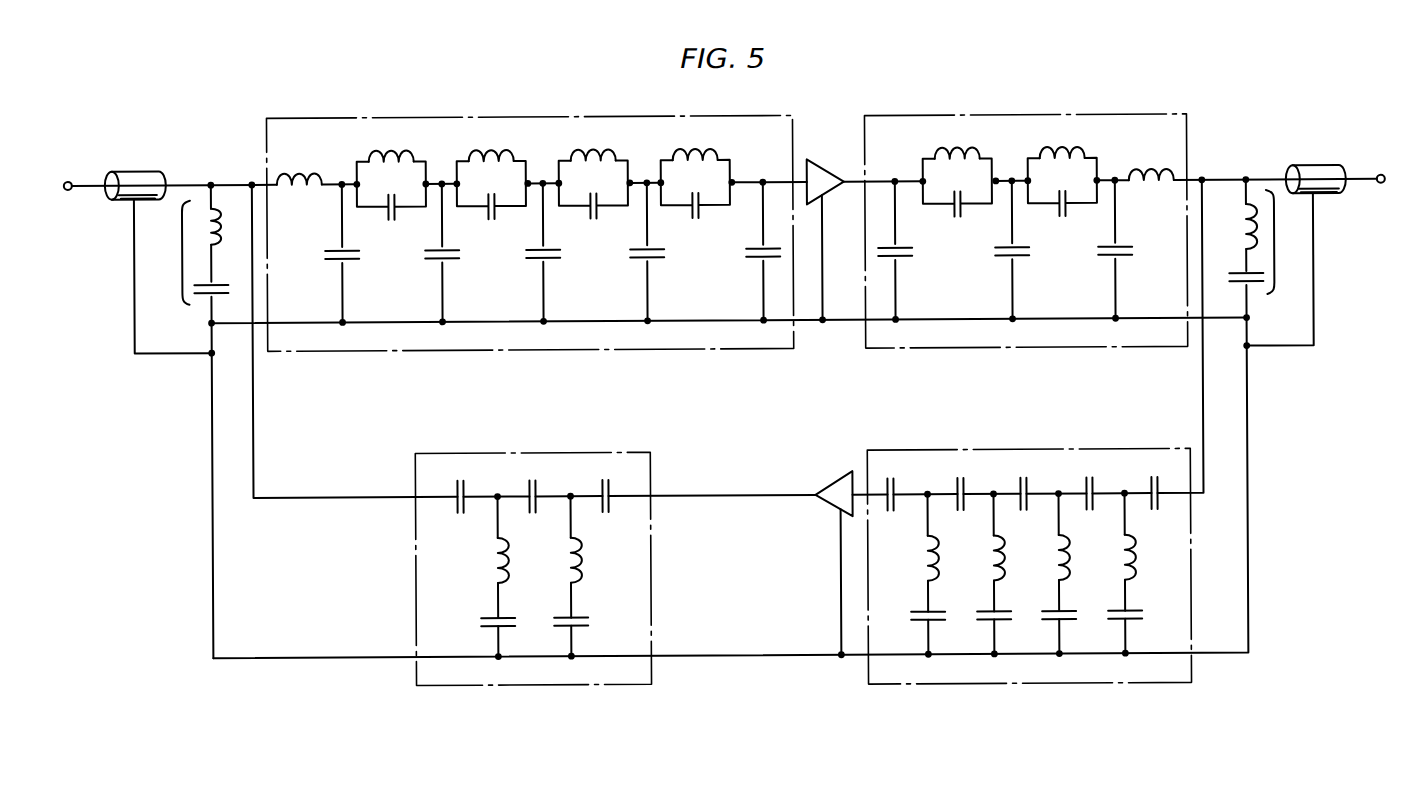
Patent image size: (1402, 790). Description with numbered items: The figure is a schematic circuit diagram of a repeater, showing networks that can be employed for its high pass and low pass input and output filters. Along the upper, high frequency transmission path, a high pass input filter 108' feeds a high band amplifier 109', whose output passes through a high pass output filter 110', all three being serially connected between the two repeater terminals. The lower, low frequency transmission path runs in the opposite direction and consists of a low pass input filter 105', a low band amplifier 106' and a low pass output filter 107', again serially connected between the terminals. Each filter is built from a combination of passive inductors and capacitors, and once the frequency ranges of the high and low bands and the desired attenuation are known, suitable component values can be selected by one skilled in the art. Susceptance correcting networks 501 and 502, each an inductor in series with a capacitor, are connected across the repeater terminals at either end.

The high pass output filter 110' is at (529, 219).
The high band amplifier 109' is at (826, 219).
The high pass input filter 108' is at (1025, 216).
The low pass input filter 105' is at (615, 555).
The low band amplifier 106' is at (828, 549).
The low pass output filter 107' is at (1021, 550).
The susceptance correcting network 501 is at (189, 253).
The susceptance correcting network 502 is at (1267, 242).